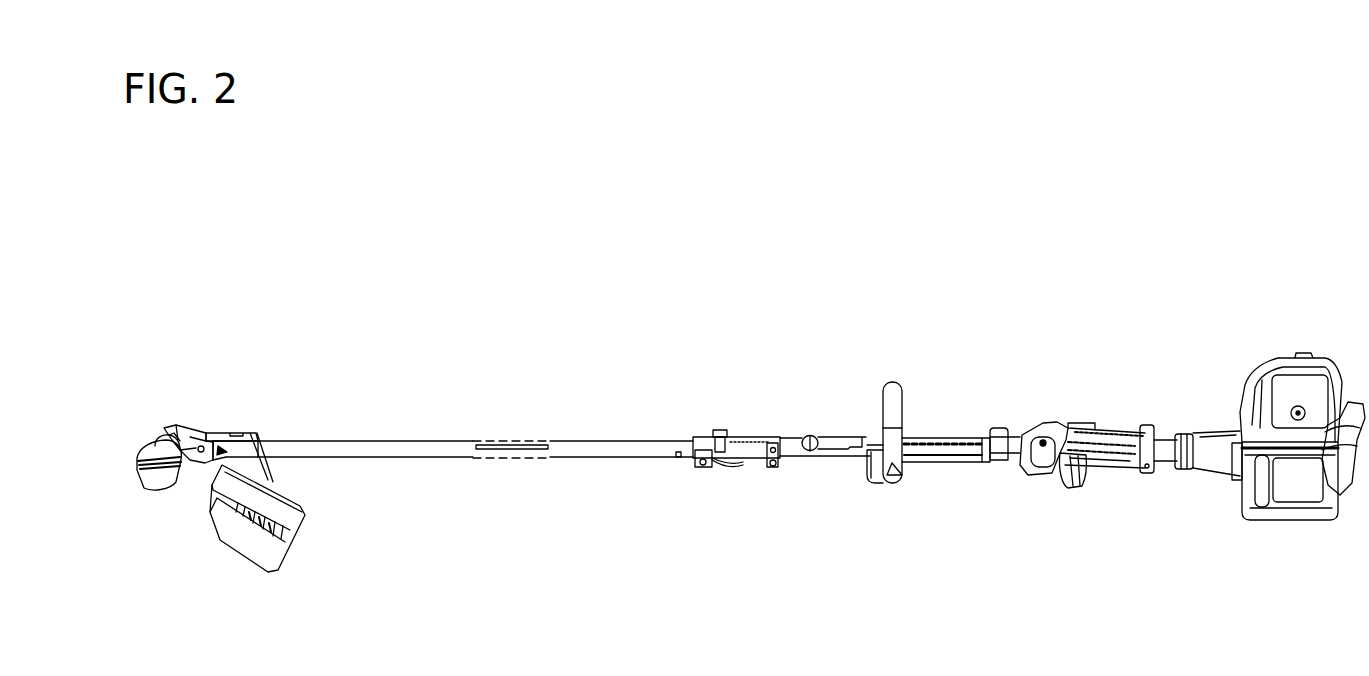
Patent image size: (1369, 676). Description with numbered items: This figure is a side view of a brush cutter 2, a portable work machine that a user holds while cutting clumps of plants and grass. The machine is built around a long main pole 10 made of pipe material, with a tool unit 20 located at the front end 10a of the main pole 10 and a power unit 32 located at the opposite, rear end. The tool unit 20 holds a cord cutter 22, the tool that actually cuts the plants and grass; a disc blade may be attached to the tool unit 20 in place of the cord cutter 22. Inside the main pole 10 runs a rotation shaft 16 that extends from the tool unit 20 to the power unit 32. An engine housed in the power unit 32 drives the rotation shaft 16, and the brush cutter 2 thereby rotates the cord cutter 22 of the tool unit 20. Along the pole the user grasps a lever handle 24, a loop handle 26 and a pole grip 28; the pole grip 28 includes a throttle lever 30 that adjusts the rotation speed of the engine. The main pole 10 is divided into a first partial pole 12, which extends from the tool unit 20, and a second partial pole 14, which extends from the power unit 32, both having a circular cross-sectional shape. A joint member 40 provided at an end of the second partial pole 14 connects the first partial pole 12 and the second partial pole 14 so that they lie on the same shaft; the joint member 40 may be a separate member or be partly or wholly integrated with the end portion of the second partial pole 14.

The brush cutter 2 is at (1191, 223).
The main pole 10 is at (643, 360).
The front end 10a is at (226, 449).
The first partial pole 12 is at (663, 440).
The second partial pole 14 is at (791, 438).
The rotation shaft 16 is at (511, 440).
The tool unit 20 is at (190, 427).
The cord cutter 22 is at (168, 473).
The lever handle 24 is at (821, 437).
The loop handle 26 is at (903, 410).
The pole grip 28 is at (1123, 428).
The throttle lever 30 is at (1068, 478).
The power unit 32 is at (1343, 380).
The joint member 40 is at (744, 437).